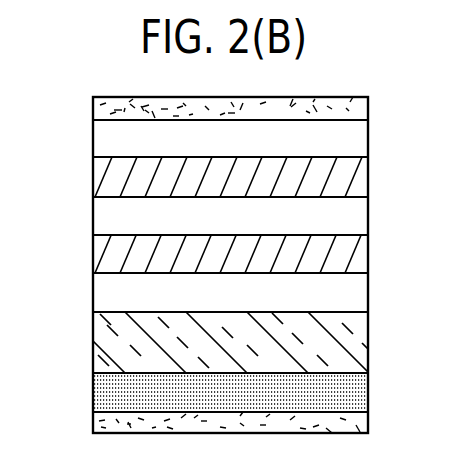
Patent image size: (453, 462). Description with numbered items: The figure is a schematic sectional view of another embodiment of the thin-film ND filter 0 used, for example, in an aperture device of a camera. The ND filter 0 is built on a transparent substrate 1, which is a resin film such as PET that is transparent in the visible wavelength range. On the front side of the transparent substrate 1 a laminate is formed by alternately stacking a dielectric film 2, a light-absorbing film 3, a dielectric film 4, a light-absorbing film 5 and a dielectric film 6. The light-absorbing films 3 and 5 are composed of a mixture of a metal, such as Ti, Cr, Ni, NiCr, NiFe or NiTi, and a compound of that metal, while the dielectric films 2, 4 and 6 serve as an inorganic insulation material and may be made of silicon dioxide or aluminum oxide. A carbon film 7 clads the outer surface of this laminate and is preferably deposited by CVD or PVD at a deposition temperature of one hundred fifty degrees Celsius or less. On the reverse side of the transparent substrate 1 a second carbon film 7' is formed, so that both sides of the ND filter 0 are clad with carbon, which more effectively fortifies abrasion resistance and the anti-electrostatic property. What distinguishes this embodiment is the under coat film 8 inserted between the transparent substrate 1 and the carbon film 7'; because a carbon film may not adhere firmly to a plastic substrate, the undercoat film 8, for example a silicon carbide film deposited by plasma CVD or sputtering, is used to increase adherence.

The ND filter 0 is at (75, 181).
The transparent substrate 1 is at (369, 341).
The dielectric film 2 is at (369, 296).
The light-absorbing film 3 is at (369, 258).
The dielectric film 4 is at (369, 219).
The light-absorbing film 5 is at (369, 180).
The dielectric film 6 is at (369, 141).
The carbon film 7 is at (251, 109).
The under coat film 8 is at (369, 393).
The carbon film 7' is at (254, 423).